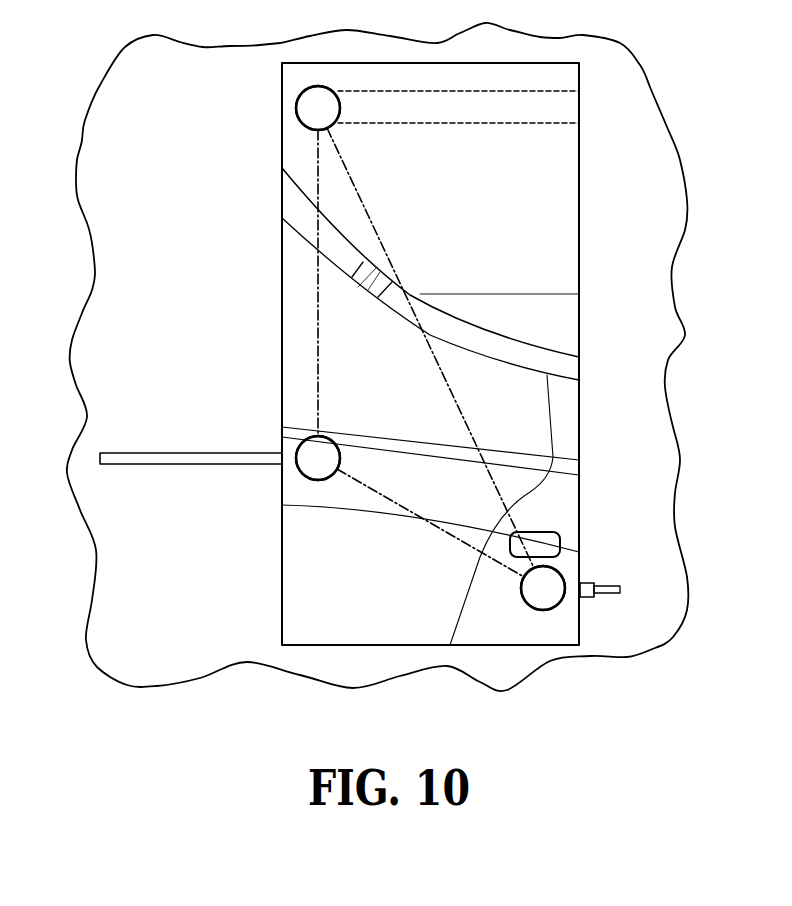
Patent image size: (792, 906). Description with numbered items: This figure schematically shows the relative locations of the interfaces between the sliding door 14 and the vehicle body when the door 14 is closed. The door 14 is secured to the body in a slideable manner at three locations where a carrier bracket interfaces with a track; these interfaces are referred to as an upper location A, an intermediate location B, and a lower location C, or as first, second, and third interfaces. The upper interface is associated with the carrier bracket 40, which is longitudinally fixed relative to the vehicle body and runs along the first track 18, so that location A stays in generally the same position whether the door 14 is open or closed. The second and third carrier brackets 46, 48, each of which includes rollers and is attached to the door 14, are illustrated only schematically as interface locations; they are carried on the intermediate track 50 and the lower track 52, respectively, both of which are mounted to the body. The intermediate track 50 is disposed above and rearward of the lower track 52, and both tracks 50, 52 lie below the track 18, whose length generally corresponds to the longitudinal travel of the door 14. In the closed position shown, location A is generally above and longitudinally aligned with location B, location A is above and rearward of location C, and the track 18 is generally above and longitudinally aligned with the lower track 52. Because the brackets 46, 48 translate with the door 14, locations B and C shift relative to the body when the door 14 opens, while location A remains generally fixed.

The door 14 is at (317, 645).
The track 18 is at (463, 123).
The carrier bracket 40 is at (307, 126).
The second carrier bracket 46 is at (307, 474).
The third carrier bracket 48 is at (545, 610).
The intermediate track 50 is at (183, 453).
The lower track 52 is at (605, 597).
The upper location A is at (296, 110).
The intermediate location B is at (318, 482).
The lower location C is at (540, 610).